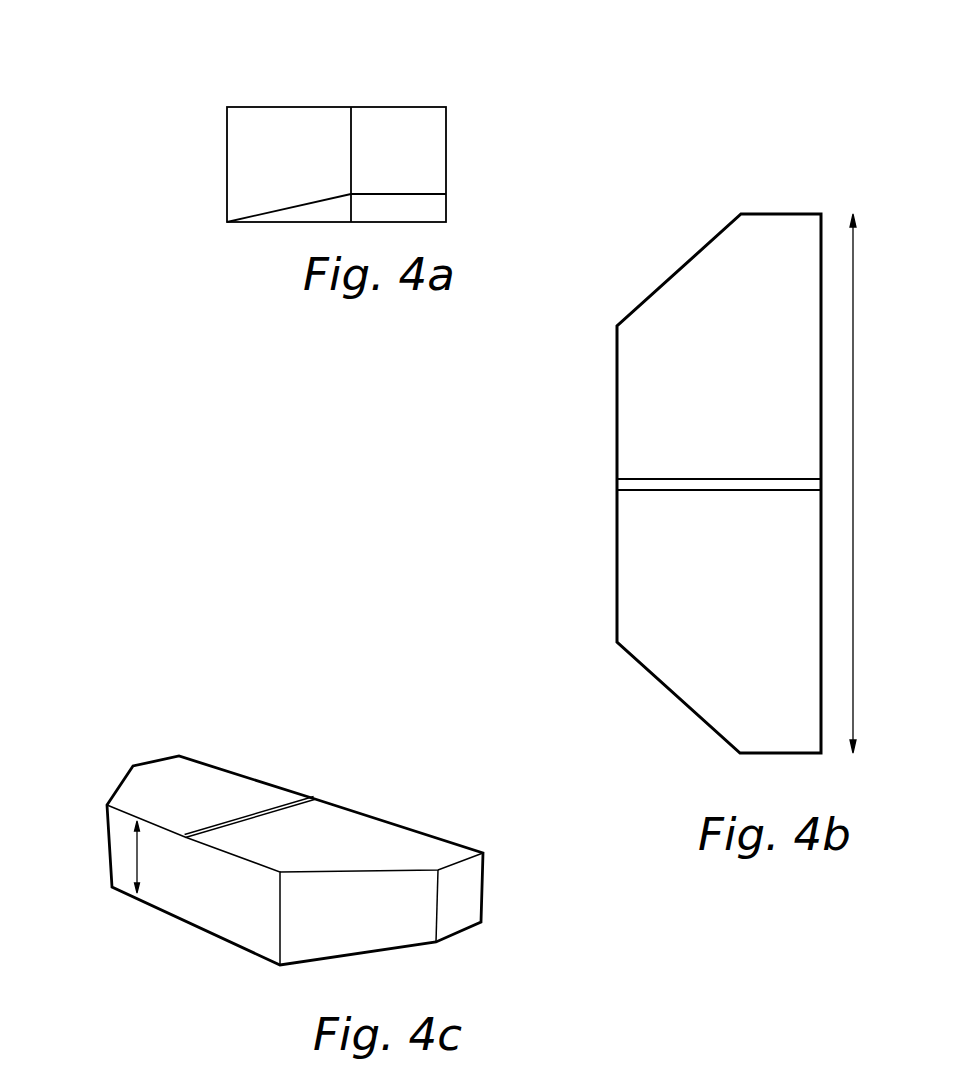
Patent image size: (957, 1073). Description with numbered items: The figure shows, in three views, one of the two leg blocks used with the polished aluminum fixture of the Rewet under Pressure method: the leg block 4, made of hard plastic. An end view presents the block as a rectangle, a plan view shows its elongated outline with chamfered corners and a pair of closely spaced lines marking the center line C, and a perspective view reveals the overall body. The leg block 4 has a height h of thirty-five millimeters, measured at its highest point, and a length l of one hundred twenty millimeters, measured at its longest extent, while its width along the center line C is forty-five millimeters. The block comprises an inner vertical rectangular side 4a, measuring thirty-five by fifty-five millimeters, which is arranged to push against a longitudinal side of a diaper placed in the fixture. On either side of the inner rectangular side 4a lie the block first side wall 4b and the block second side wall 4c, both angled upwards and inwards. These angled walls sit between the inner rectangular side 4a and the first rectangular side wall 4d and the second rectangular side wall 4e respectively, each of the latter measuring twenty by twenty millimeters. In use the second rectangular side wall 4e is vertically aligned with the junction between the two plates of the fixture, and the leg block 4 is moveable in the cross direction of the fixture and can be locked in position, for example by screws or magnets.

In FIG. 4A, the leg block 4 is at (205, 248).
In FIG. 4B, the leg block 4 is at (663, 712).
In FIG. 4C, the leg block 4 is at (117, 733).
In FIG. 4C, the inner vertical rectangular side 4a is at (235, 920).
In FIG. 4A, the block first side wall 4b is at (285, 132).
In FIG. 4C, the block first side wall 4b is at (365, 923).
In FIG. 4C, the block second side wall 4c is at (118, 777).
In FIG. 4A, the first rectangular side wall 4d is at (410, 157).
In FIG. 4C, the first rectangular side wall 4d is at (465, 902).
In FIG. 4C, the second rectangular side wall 4e is at (156, 756).
In FIG. 4B, the center line C is at (623, 483).
In FIG. 4C, the center line C is at (262, 812).
In FIG. 4B, the length l is at (860, 483).
In FIG. 4C, the height h is at (148, 857).